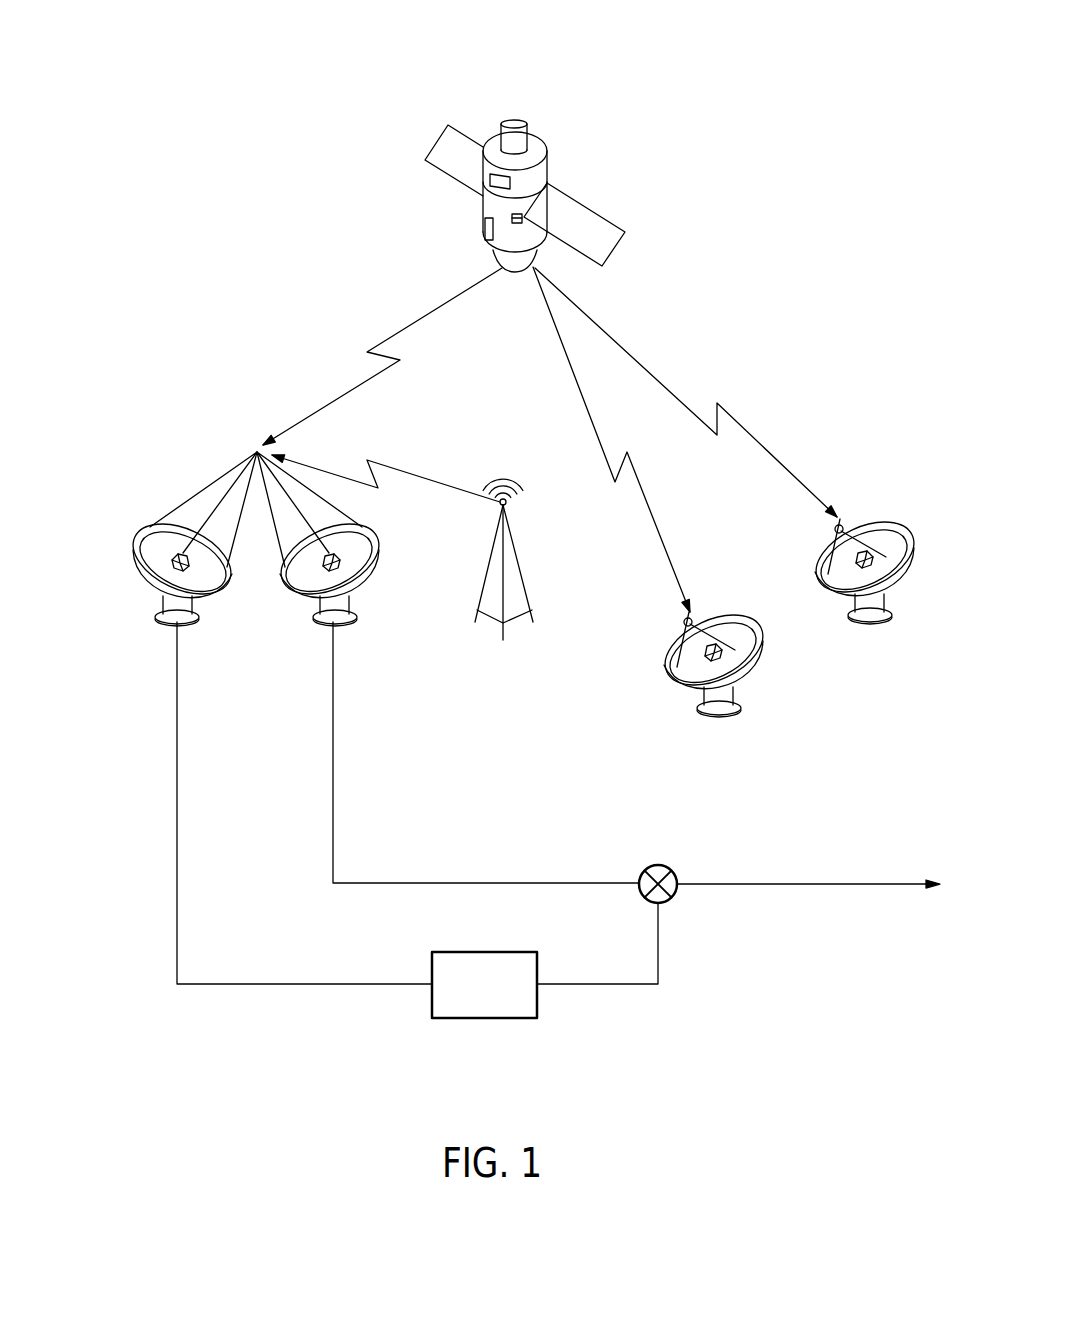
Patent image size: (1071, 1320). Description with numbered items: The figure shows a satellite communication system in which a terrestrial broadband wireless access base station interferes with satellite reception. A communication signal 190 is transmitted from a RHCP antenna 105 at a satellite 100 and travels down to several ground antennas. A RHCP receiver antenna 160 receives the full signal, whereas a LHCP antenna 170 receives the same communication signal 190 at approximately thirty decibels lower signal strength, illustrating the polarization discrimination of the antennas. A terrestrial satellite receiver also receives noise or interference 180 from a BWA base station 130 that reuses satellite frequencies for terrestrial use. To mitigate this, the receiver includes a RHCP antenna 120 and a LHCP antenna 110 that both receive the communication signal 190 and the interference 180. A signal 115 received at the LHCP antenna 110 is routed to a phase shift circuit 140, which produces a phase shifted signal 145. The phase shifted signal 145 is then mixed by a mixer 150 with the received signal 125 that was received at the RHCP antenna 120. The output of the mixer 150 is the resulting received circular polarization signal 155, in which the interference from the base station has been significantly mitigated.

The satellite 100 is at (513, 113).
The RHCP antenna 105 is at (497, 258).
The LHCP antenna 110 is at (132, 558).
The signal 115 is at (303, 983).
The RHCP antenna 120 is at (380, 560).
The received signal 125 is at (487, 883).
The BWA base station 130 is at (515, 557).
The phase shift circuit 140 is at (483, 1020).
The phase shifted signal 145 is at (597, 985).
The mixer 150 is at (660, 863).
The received circular polarization signal 155 is at (805, 883).
The RHCP receiver antenna 160 is at (665, 670).
The LHCP antenna 170 is at (913, 567).
The interference 180 is at (432, 478).
The communication signal 190 is at (333, 398).